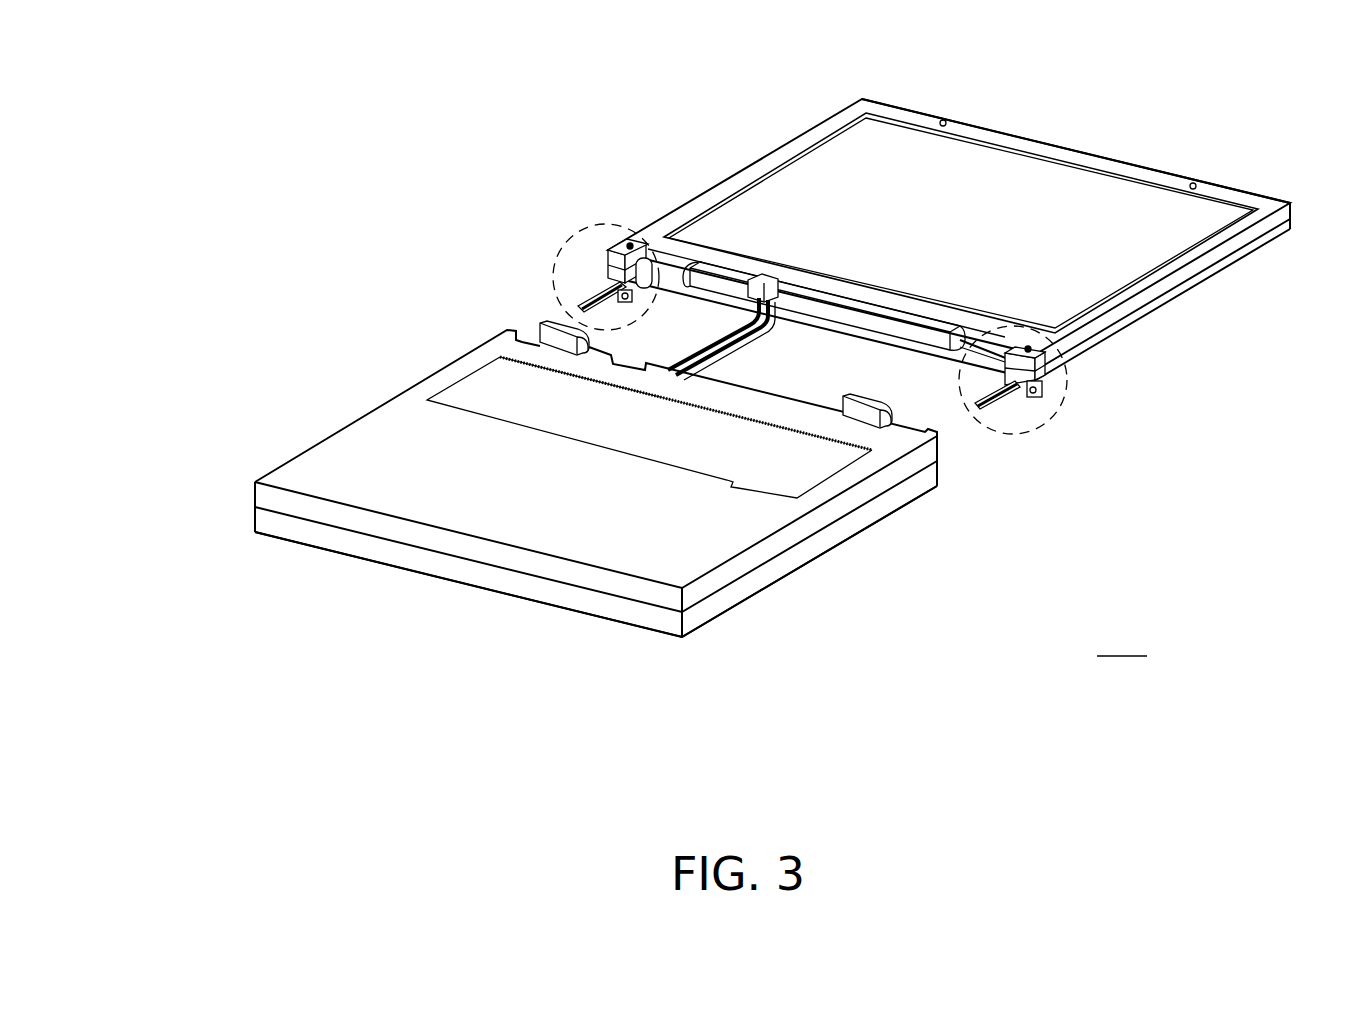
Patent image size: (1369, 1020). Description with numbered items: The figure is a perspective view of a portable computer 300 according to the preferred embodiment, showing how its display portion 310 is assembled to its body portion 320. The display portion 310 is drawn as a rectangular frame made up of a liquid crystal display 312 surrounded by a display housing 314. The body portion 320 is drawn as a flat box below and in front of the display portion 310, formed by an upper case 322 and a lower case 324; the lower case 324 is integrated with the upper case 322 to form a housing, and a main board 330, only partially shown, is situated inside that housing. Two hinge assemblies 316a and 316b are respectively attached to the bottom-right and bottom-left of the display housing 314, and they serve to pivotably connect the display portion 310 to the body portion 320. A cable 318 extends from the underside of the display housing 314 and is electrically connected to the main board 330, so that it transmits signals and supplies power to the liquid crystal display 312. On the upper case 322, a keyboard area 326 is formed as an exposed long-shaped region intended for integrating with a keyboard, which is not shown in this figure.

The portable computer 300 is at (1097, 656).
The display portion 310 is at (955, 255).
The liquid crystal display 312 is at (752, 207).
The display housing 314 is at (1265, 203).
The hinge assembly 316a is at (1027, 433).
The hinge assembly 316b is at (603, 227).
The cable 318 is at (753, 333).
The body portion 320 is at (596, 482).
The upper case 322 is at (265, 497).
The lower case 324 is at (265, 522).
The keyboard area 326 is at (577, 440).
The main board 330 is at (483, 390).